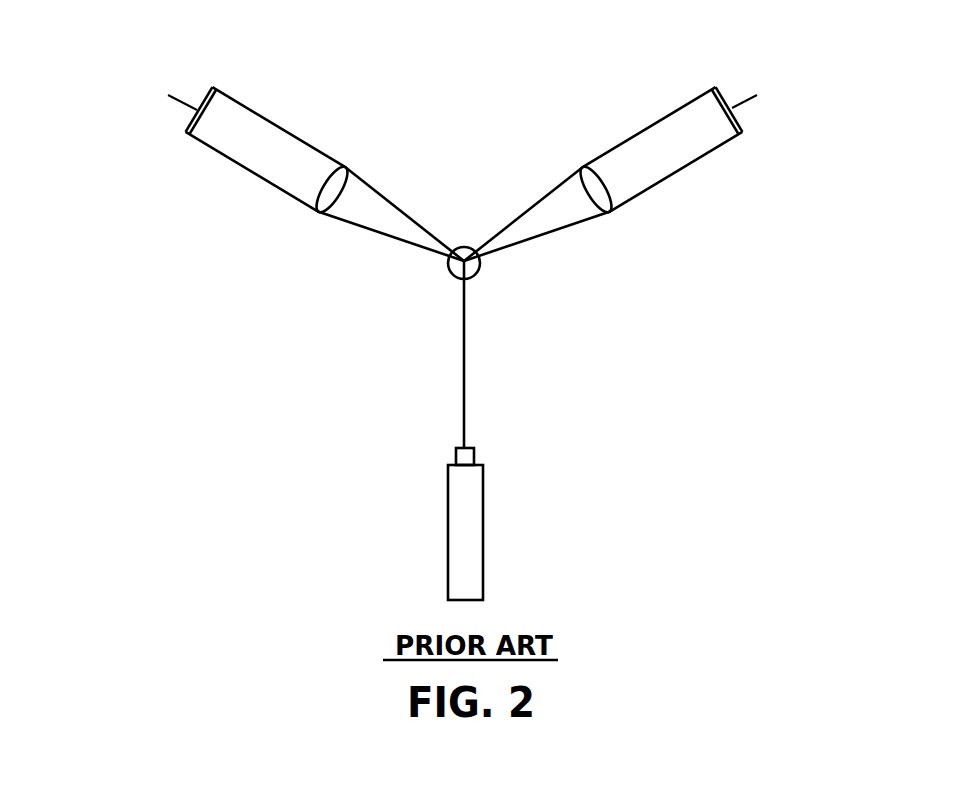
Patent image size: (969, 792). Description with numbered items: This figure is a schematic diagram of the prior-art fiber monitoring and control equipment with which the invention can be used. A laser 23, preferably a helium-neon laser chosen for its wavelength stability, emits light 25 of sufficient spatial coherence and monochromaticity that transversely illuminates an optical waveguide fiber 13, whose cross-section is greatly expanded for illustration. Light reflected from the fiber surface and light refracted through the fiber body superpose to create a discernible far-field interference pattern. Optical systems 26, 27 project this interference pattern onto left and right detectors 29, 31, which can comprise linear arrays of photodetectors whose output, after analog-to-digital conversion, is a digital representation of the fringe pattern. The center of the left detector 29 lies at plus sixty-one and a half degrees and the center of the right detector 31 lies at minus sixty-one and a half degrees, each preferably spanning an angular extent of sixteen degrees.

The optical waveguide fiber 13 is at (464, 261).
The laser 23 is at (468, 532).
The light 25 is at (464, 370).
The optical system 26 is at (329, 196).
The optical system 27 is at (603, 195).
The left detector 29 is at (213, 87).
The right detector 31 is at (747, 128).